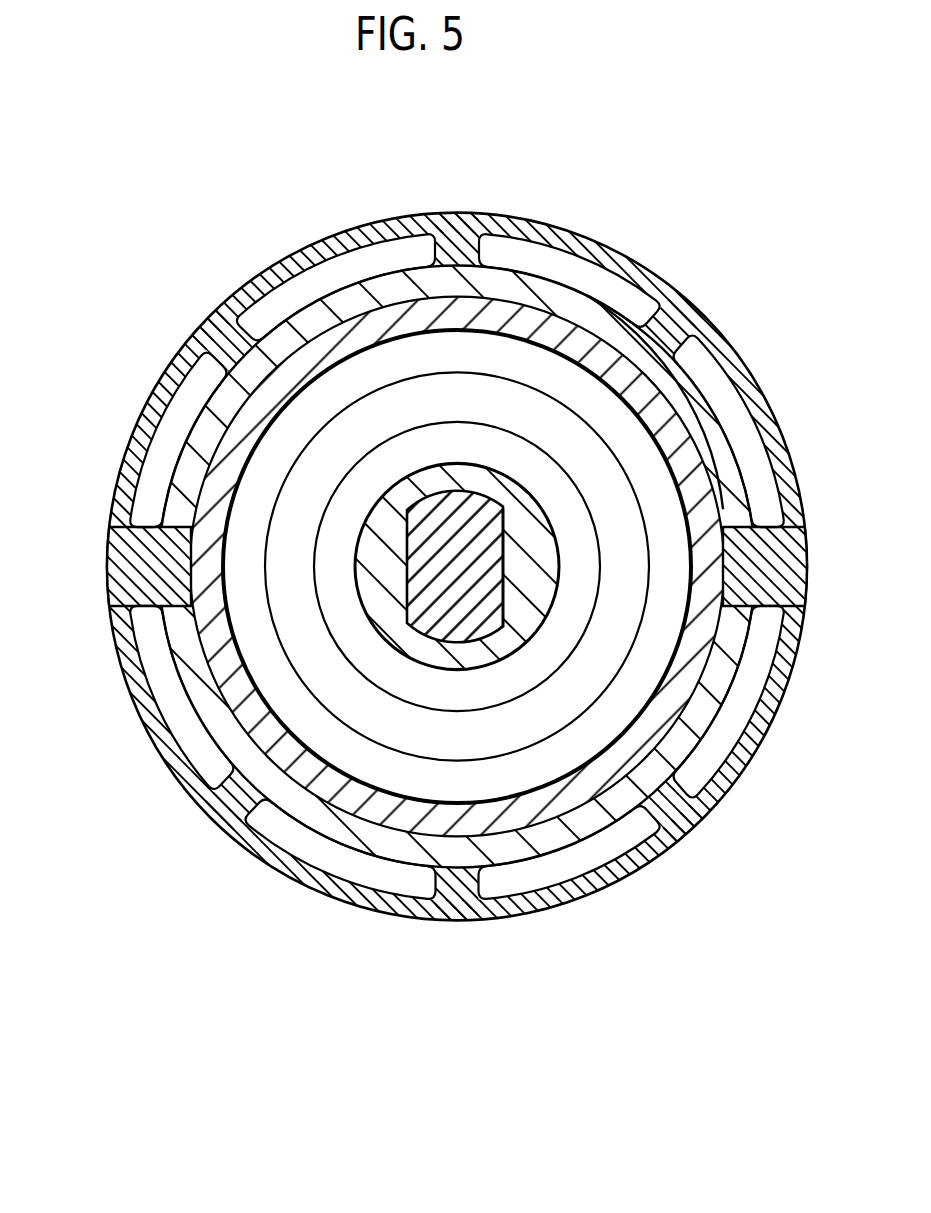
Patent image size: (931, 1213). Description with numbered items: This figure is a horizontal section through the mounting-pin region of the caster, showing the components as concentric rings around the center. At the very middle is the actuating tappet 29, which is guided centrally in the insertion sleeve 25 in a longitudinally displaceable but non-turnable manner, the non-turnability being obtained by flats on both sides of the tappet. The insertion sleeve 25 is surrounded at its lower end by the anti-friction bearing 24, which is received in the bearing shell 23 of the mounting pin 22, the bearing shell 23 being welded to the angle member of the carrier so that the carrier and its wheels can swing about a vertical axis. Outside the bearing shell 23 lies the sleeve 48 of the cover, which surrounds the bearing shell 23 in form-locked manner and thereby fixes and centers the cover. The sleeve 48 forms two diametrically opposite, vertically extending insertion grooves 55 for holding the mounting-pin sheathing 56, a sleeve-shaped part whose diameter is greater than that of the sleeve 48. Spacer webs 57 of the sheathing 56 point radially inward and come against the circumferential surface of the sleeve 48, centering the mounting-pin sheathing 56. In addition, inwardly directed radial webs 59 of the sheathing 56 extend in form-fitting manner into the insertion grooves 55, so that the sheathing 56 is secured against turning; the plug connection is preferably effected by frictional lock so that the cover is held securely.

The mounting pin 22 is at (550, 202).
The bearing shell 23 is at (656, 404).
The anti-friction bearing 24 is at (325, 612).
The insertion sleeve 25 is at (505, 645).
The actuating tappet 29 is at (350, 327).
The sleeve 48 is at (595, 317).
The insertion grooves 55 is at (178, 615).
The mounting-pin sheathing 56 is at (458, 930).
The spacer webs 57 is at (216, 321).
The radial webs 59 is at (148, 528).